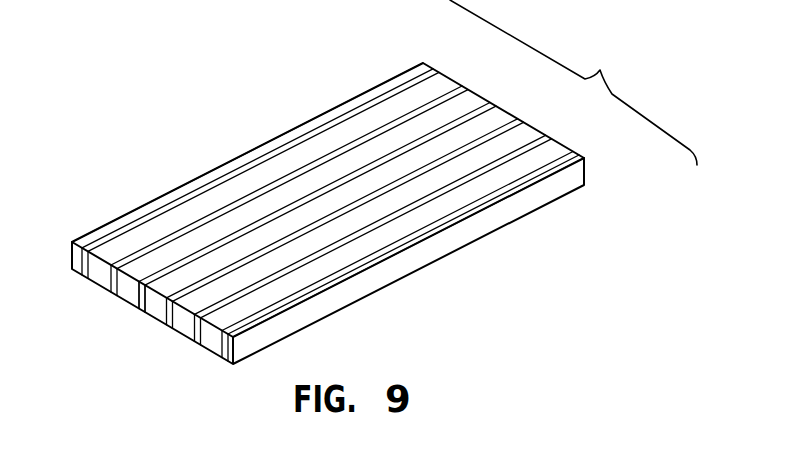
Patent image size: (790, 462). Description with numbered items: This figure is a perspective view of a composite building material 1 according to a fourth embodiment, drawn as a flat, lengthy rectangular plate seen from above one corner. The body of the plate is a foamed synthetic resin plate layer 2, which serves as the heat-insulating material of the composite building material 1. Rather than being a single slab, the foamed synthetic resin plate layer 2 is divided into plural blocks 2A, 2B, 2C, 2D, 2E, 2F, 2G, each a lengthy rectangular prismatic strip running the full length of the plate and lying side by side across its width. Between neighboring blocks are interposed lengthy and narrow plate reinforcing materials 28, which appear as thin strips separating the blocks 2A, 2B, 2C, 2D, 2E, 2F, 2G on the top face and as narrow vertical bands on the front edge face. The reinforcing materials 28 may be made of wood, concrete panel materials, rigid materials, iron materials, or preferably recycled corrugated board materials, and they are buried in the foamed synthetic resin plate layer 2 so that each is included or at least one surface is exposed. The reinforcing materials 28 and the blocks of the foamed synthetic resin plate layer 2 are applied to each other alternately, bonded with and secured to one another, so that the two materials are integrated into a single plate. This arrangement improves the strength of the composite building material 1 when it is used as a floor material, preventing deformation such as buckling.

The composite building material 1 is at (177, 143).
The foamed synthetic resin plate layer 2 is at (573, 82).
The block 2A is at (406, 75).
The block 2B is at (430, 82).
The block 2C is at (460, 100).
The block 2D is at (487, 118).
The block 2E is at (525, 131).
The block 2F is at (547, 146).
The block 2G is at (563, 177).
The lengthy and narrow plate reinforcing material 28 is at (136, 298).